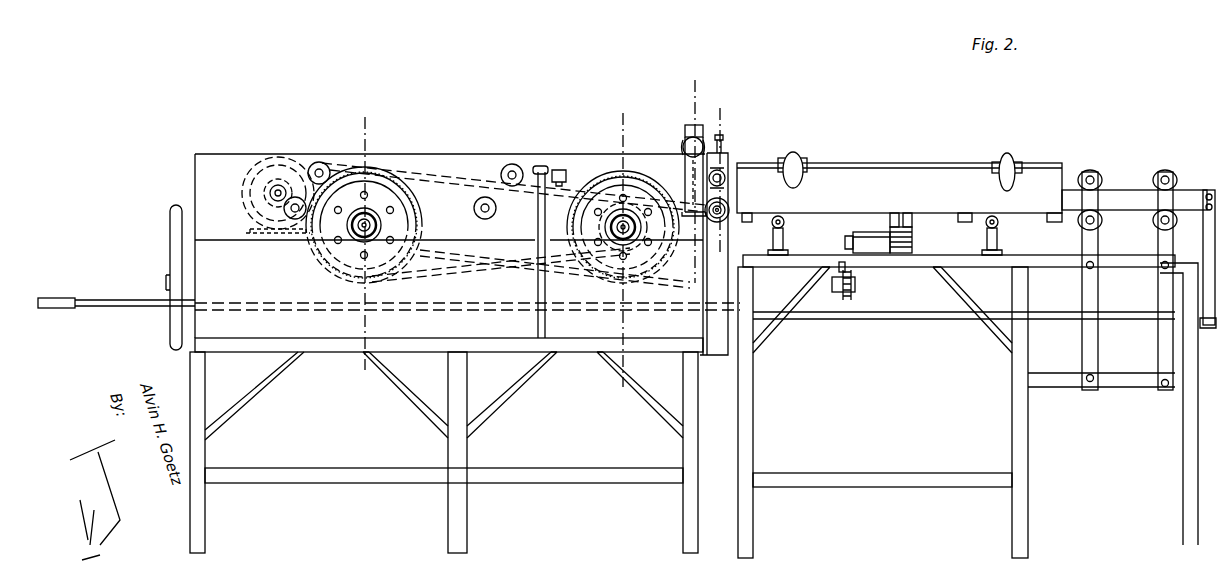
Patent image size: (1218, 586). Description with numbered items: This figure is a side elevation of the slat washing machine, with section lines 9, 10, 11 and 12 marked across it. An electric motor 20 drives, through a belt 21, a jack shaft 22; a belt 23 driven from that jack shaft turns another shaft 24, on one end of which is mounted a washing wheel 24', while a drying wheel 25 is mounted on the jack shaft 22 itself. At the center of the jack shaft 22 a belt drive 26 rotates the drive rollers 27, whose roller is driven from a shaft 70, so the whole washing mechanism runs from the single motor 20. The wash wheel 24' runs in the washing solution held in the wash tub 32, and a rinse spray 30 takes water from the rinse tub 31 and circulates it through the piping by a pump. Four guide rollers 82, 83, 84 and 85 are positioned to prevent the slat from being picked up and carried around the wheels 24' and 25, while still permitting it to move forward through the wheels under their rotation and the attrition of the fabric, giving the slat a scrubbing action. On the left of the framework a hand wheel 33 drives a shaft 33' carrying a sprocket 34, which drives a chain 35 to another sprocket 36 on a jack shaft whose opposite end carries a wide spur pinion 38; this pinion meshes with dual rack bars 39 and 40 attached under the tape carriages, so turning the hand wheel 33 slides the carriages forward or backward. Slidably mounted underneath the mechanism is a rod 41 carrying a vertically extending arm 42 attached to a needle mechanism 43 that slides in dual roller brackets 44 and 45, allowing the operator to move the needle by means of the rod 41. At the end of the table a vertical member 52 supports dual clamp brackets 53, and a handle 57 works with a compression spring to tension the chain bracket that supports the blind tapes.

The section line 9 is at (375, 128).
The section line 10 is at (633, 133).
The section line 11 is at (729, 121).
The section line 12 is at (704, 91).
The electric motor 20 is at (250, 165).
The belt 21 is at (438, 165).
The jack shaft 22 is at (623, 246).
The belt 23 is at (507, 190).
The shaft 24 is at (365, 225).
The washing wheel 24' is at (443, 224).
The drying wheel 25 is at (640, 190).
The belt drive 26 is at (655, 256).
The drive rollers 27 is at (727, 182).
The rinse spray 30 is at (560, 166).
The rinse tub 31 is at (650, 340).
The wash tub 32 is at (300, 340).
The hand wheel 33 is at (158, 277).
The shaft 33' is at (956, 406).
The sprocket 34 is at (852, 294).
The chain 35 is at (850, 274).
The sprocket 36 is at (852, 232).
The spur pinion 38 is at (912, 238).
The rack bar 39 is at (890, 220).
The rack bar 40 is at (912, 220).
The rod 41 is at (160, 305).
The vertically extending arm 42 is at (1203, 213).
The needle mechanism 43 is at (1125, 190).
The roller bracket 44 is at (1090, 170).
The roller bracket 45 is at (1165, 170).
The vertical member 52 is at (872, 172).
The clamp bracket 53 is at (805, 160).
The handle 57 is at (800, 180).
The shaft 70 is at (730, 208).
The guide roller 82 is at (290, 212).
The guide roller 83 is at (320, 165).
The guide roller 84 is at (485, 214).
The guide roller 85 is at (527, 141).